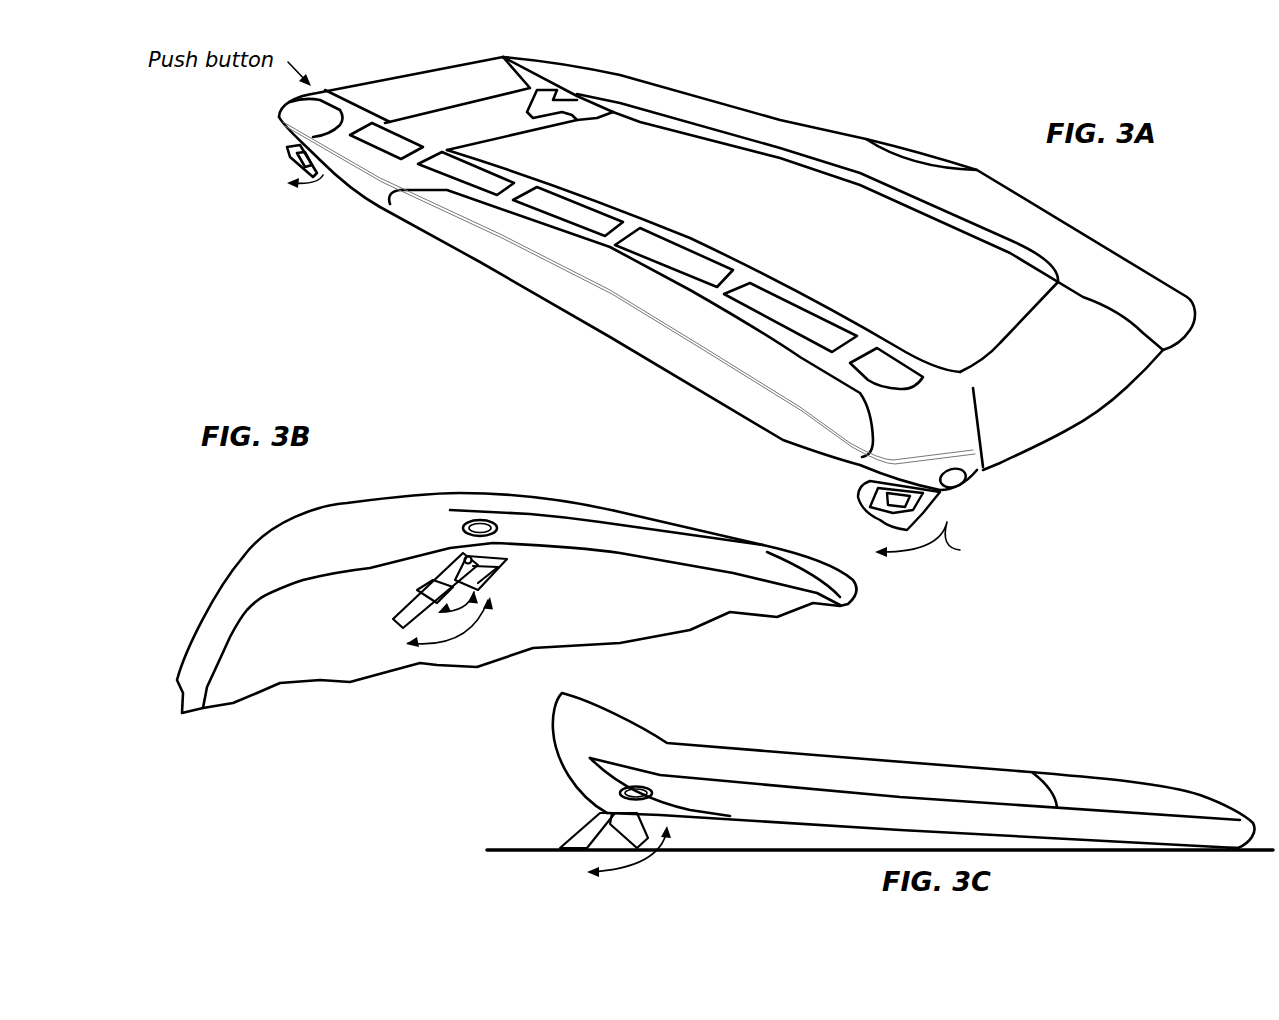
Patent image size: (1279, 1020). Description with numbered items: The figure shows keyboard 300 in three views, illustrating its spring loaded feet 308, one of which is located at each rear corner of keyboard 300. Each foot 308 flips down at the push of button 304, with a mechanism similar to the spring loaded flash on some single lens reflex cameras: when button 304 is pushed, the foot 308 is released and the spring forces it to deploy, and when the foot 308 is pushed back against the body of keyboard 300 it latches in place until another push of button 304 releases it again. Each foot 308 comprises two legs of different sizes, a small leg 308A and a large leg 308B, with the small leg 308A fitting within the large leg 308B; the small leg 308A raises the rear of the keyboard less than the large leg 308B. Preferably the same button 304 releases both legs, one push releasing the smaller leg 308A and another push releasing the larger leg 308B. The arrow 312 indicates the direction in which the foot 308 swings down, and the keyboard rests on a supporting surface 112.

In FIG. 3A, the keyboard 300 is at (1166, 190).
In FIG. 3B, the keyboard 300 is at (290, 500).
In FIG. 3C, the keyboard 300 is at (525, 767).
In FIG. 3A, the button 304 is at (976, 496).
In FIG. 3A, the spring loaded foot 308 is at (862, 491).
In FIG. 3B, the small leg 308A is at (475, 572).
In FIG. 3C, the small leg 308A is at (658, 816).
In FIG. 3B, the large leg 308B is at (403, 615).
In FIG. 3C, the large leg 308B is at (578, 822).
In FIG. 3A, the rotation direction arrow 312 is at (940, 543).
In FIG. 3C, the support surface 112 is at (537, 852).